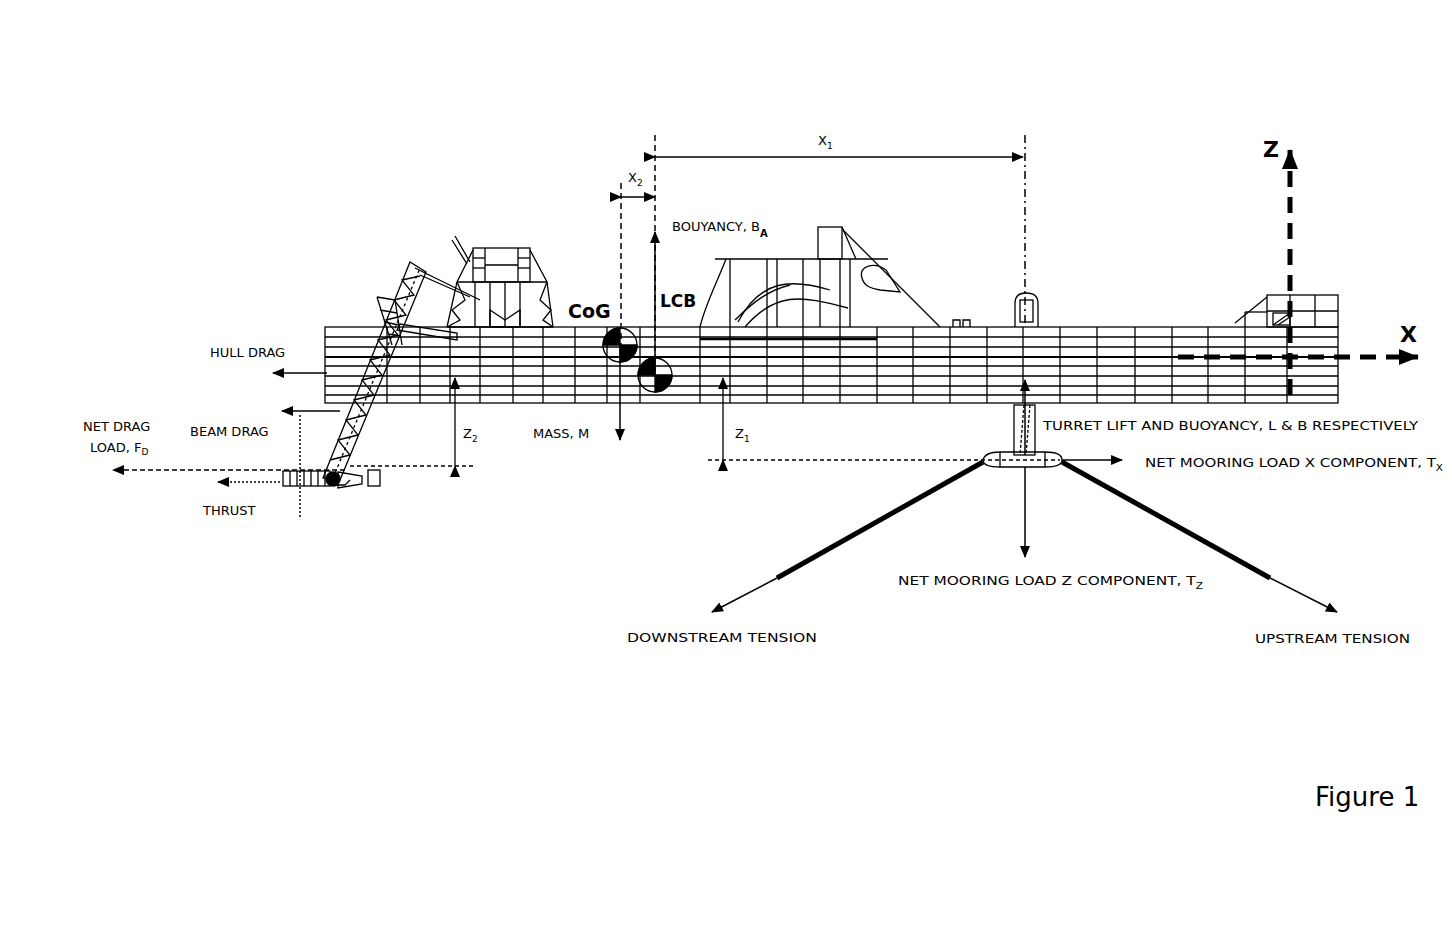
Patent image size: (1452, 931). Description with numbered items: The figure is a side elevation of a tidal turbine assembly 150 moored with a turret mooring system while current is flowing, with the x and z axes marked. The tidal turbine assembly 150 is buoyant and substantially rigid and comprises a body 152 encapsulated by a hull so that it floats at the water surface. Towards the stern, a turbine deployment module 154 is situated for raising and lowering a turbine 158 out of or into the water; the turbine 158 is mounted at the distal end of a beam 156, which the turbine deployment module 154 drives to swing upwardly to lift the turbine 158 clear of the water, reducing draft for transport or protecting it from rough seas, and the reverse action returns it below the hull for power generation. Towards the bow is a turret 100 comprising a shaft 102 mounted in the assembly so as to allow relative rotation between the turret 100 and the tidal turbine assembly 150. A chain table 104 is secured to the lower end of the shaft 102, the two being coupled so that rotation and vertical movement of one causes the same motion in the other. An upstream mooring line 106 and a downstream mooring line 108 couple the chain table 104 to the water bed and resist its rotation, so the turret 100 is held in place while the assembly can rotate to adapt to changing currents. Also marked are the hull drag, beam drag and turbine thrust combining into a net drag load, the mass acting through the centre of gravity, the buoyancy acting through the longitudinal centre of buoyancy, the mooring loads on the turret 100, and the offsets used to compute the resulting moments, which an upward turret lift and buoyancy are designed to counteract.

The turret 100 is at (1053, 483).
The shaft 102 is at (1020, 433).
The chain table 104 is at (1008, 467).
The upstream mooring line 106 is at (1230, 560).
The downstream mooring line 108 is at (816, 558).
The tidal turbine assembly 150 is at (582, 158).
The body 152 is at (1198, 337).
The turbine deployment module 154 is at (500, 270).
The beam 156 is at (395, 470).
The turbine 158 is at (326, 487).